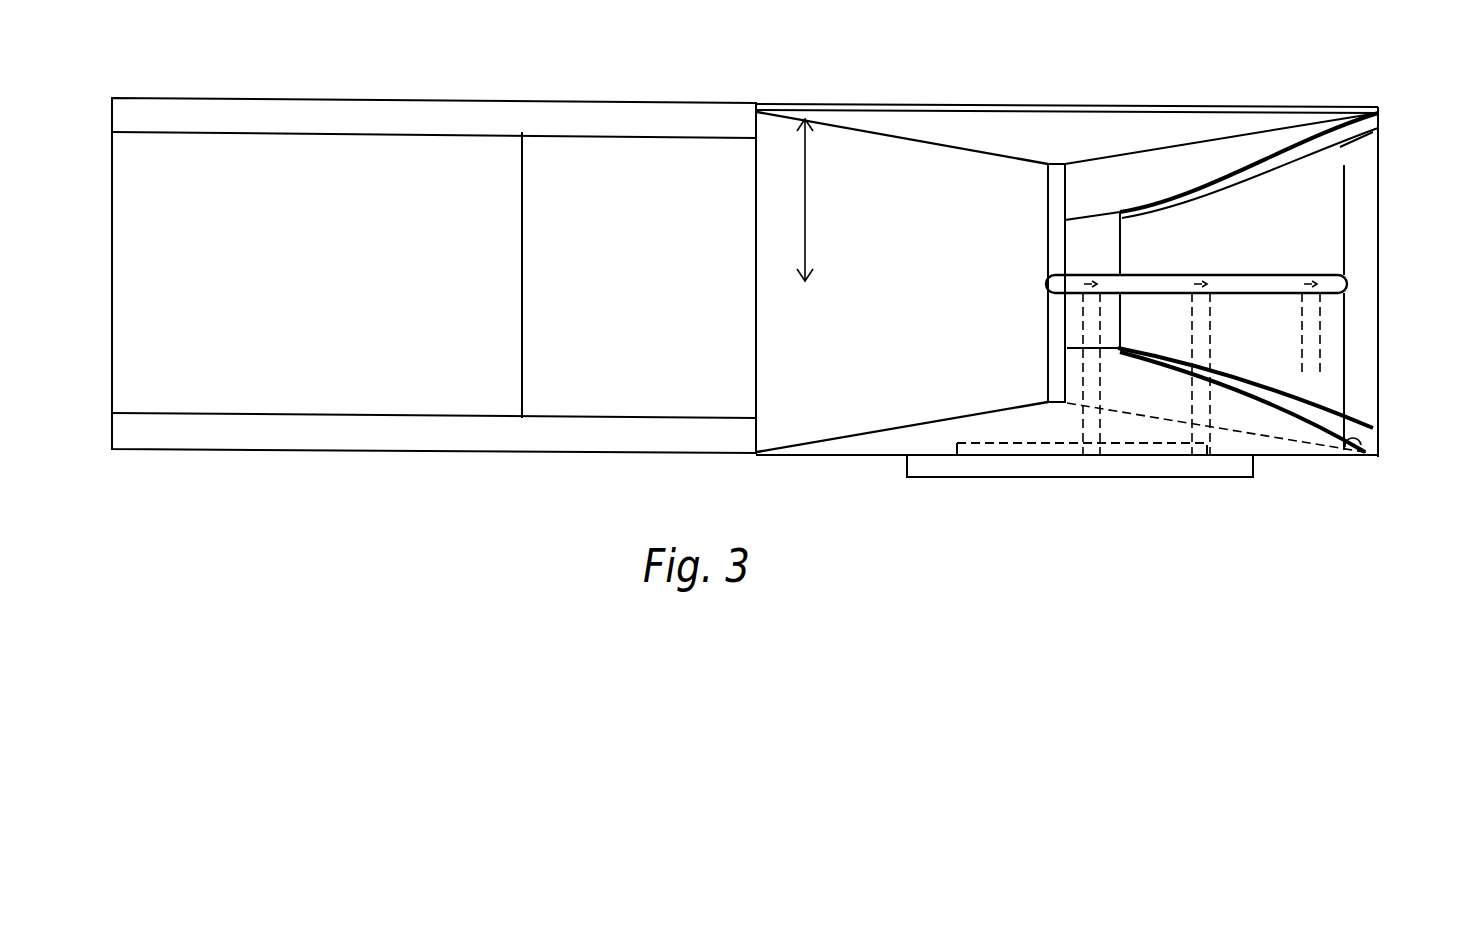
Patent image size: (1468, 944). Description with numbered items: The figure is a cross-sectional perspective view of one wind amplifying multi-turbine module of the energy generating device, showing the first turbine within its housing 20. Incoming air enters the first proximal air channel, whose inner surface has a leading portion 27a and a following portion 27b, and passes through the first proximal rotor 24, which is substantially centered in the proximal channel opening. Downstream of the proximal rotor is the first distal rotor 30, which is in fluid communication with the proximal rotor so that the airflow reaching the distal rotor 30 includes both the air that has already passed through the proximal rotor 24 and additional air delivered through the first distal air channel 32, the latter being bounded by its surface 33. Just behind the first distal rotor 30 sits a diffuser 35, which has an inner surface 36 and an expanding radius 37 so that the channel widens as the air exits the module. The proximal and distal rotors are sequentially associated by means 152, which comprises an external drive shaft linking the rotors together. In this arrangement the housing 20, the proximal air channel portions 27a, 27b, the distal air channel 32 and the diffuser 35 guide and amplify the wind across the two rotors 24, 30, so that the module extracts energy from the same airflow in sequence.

The housing 20 is at (1078, 104).
The first proximal rotor 24 is at (1350, 288).
The leading portion 27a is at (1365, 375).
The following portion 27b is at (1232, 257).
The first distal rotor 30 is at (1050, 277).
The first distal air channel 32 is at (1380, 120).
The surface 33 is at (1370, 455).
The diffuser 35 is at (893, 428).
The inner surface 36 is at (882, 170).
The expanding radius 37 is at (805, 176).
The means for sequentially associating said rotors 152 is at (1248, 288).